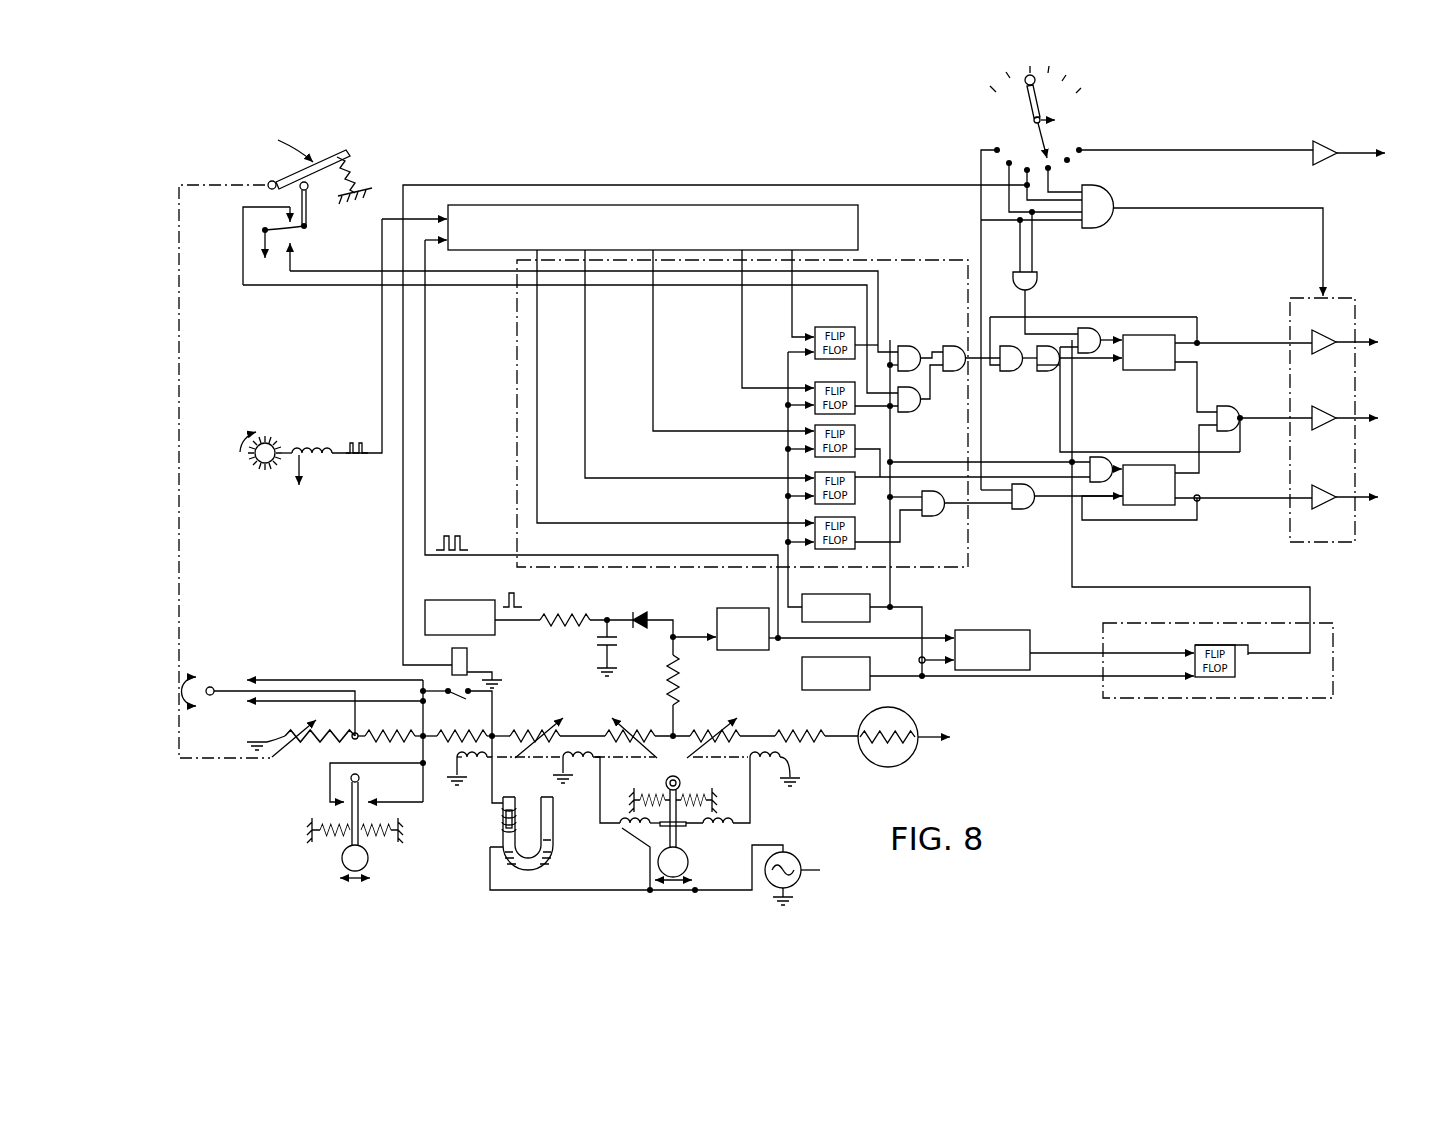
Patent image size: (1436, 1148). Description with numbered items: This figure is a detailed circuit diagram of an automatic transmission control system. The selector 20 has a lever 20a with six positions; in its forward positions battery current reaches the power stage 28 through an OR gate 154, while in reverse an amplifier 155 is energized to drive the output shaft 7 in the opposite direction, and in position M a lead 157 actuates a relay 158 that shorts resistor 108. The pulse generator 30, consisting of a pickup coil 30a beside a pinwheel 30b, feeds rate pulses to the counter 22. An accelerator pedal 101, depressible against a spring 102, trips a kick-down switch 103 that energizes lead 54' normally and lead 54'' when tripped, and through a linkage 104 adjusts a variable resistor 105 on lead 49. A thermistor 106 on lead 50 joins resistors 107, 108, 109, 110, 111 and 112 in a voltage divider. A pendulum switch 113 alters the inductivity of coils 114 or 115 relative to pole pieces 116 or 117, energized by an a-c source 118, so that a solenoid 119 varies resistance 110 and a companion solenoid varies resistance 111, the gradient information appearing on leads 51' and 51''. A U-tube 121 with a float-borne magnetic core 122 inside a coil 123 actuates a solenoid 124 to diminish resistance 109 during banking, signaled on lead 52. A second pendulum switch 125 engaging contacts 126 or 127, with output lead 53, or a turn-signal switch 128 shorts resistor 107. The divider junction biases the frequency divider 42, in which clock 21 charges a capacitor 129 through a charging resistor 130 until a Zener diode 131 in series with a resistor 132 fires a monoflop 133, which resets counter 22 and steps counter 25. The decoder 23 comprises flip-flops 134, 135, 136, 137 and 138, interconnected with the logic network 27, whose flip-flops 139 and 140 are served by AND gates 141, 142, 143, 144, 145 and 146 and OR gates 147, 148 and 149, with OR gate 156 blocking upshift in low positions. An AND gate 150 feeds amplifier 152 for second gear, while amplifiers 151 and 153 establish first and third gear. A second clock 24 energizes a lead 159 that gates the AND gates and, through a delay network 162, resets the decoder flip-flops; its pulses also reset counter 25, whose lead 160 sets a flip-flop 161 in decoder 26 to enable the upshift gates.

The output shaft 7 is at (267, 466).
The selector 20 is at (1005, 118).
The selector lever 20a is at (1045, 100).
The clock 21 is at (460, 600).
The counter 22 is at (860, 218).
The decoder 23 is at (962, 259).
The second clock 24 is at (802, 673).
The counter 25 is at (1012, 630).
The second decoder 26 is at (1280, 700).
The logic network 27 is at (1192, 306).
The power stage 28 is at (1337, 545).
The pulse generator 30 is at (298, 432).
The pickup coil 30a is at (330, 446).
The pinwheel 30b is at (270, 440).
The frequency divider 42 is at (690, 650).
The lead 49 is at (336, 729).
The lead 50 is at (840, 740).
The lead 51' is at (587, 847).
The lead 51'' is at (775, 811).
The output lead 52 is at (494, 771).
The output lead 53 is at (420, 750).
The lead 54' is at (570, 339).
The lead 54'' is at (594, 311).
The accelerator pedal 101 is at (341, 151).
The spring 102 is at (356, 164).
The kick-down switch 103 is at (305, 228).
The linkage 104 is at (178, 548).
The variable resistor 105 is at (278, 734).
The thermistor 106 is at (905, 750).
The resistor 107 is at (386, 729).
The resistor 108 is at (462, 729).
The resistor 109 is at (540, 730).
The resistor 110 is at (633, 728).
The resistor 111 is at (718, 729).
The resistor 112 is at (805, 729).
The pendulum switch 113 is at (688, 872).
The coil 114 is at (631, 831).
The coil 115 is at (747, 808).
The magnetic pole piece 116 is at (657, 845).
The magnetic pole piece 117 is at (722, 830).
The a-c source 118 is at (802, 871).
The solenoid 119 is at (580, 768).
The U-tube 121 is at (541, 866).
The magnetic core 122 is at (504, 816).
The coil 123 is at (505, 836).
The solenoid 124 is at (504, 806).
The pendulum switch 125 is at (341, 860).
The contact 126 is at (340, 801).
The contact 127 is at (376, 802).
The switch 128 is at (222, 688).
The capacitor 129 is at (618, 641).
The charging resistor 130 is at (572, 613).
The Zener diode 131 is at (640, 611).
The resistor 132 is at (650, 686).
The monoflop 133 is at (725, 608).
The flip-flop 134 is at (815, 531).
The flip-flop 135 is at (815, 486).
The flip-flop 136 is at (815, 439).
The flip-flop 137 is at (815, 396).
The flip-flop 138 is at (818, 327).
The flip-flop 139 is at (1154, 506).
The flip-flop 140 is at (1143, 371).
The AND gate 141 is at (935, 518).
The AND gate 142 is at (910, 346).
The AND gate 143 is at (912, 413).
The AND gate 144 is at (1102, 447).
The AND gate 145 is at (1088, 328).
The AND gate 146 is at (1005, 372).
The OR gate 147 is at (1023, 512).
The OR gate 148 is at (950, 372).
The OR gate 149 is at (1045, 372).
The AND gate 150 is at (1234, 410).
The amplifier 151 is at (1325, 481).
The amplifier 152 is at (1325, 403).
The amplifier 153 is at (1318, 339).
The OR gate 154 is at (1112, 201).
The amplifier 155 is at (1323, 140).
The OR gate 156 is at (1040, 282).
The lead 157 is at (683, 184).
The relay 158 is at (470, 658).
The lead 159 is at (892, 583).
The lead 160 is at (1153, 652).
The flip-flop 161 is at (1212, 688).
The delay network 162 is at (872, 620).